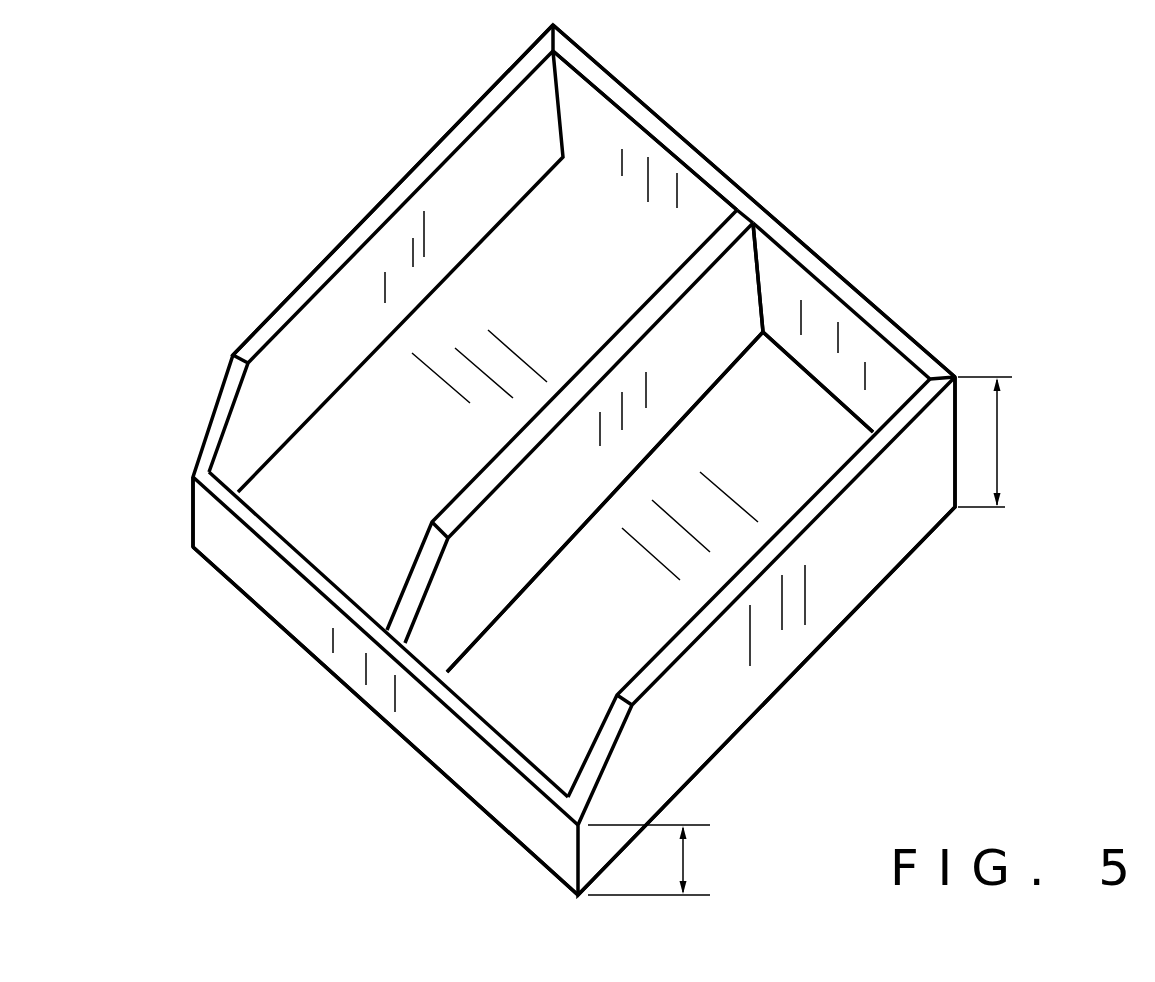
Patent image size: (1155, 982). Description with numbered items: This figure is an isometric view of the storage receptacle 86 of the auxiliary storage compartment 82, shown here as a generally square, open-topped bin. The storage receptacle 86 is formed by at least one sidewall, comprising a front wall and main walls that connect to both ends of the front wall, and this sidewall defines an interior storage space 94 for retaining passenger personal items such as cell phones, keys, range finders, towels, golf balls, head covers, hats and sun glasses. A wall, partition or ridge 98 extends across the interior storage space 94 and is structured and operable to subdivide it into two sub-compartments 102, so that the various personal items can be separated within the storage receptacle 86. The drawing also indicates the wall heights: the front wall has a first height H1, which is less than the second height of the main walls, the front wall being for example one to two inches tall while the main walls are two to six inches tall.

The bin 82 is at (953, 198).
The storage receptacle 86 is at (690, 137).
The partition 98 is at (613, 350).
The interior storage space 94 is at (780, 424).
The sub-compartment 102 is at (438, 458).
The first height of front wall H1 is at (659, 860).